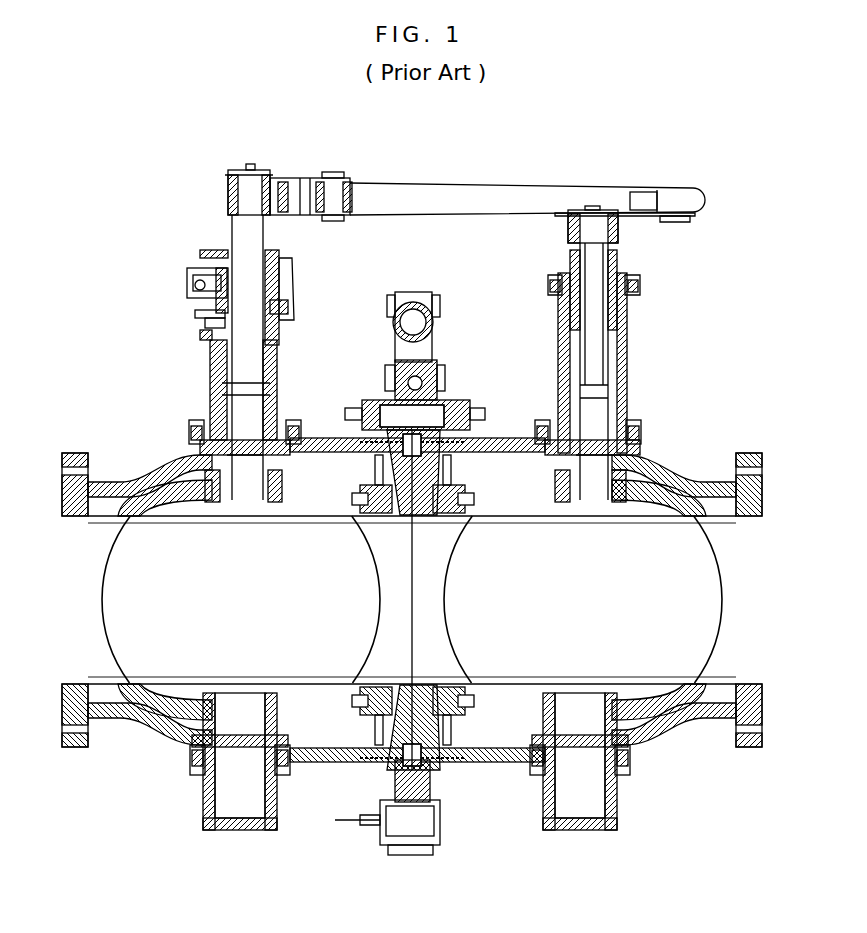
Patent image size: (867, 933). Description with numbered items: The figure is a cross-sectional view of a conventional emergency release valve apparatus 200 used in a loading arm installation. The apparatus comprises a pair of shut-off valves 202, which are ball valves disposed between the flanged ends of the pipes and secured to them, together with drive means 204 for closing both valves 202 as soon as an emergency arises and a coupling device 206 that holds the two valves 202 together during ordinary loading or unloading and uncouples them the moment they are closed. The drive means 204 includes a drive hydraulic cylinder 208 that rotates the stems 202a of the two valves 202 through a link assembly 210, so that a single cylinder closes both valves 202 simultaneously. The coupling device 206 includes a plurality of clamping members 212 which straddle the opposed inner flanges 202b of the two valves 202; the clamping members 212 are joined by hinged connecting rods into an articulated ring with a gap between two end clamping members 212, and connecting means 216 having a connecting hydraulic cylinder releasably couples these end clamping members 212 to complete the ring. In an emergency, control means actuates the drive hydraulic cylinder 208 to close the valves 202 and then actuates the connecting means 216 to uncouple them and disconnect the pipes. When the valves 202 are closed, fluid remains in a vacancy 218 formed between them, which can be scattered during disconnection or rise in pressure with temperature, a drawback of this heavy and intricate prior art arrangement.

The emergency release valve apparatus 200 is at (588, 180).
The shut-off valves 202 is at (170, 464).
The stems 202a is at (232, 412).
The inner flanges 202b is at (376, 468).
The drive means 204 is at (357, 178).
The coupling device 206 is at (401, 852).
The drive hydraulic cylinder 208 is at (196, 268).
The link assembly 210 is at (488, 197).
The clamping members 212 is at (393, 400).
The connecting means 216 is at (420, 298).
The vacancy 218 is at (440, 652).